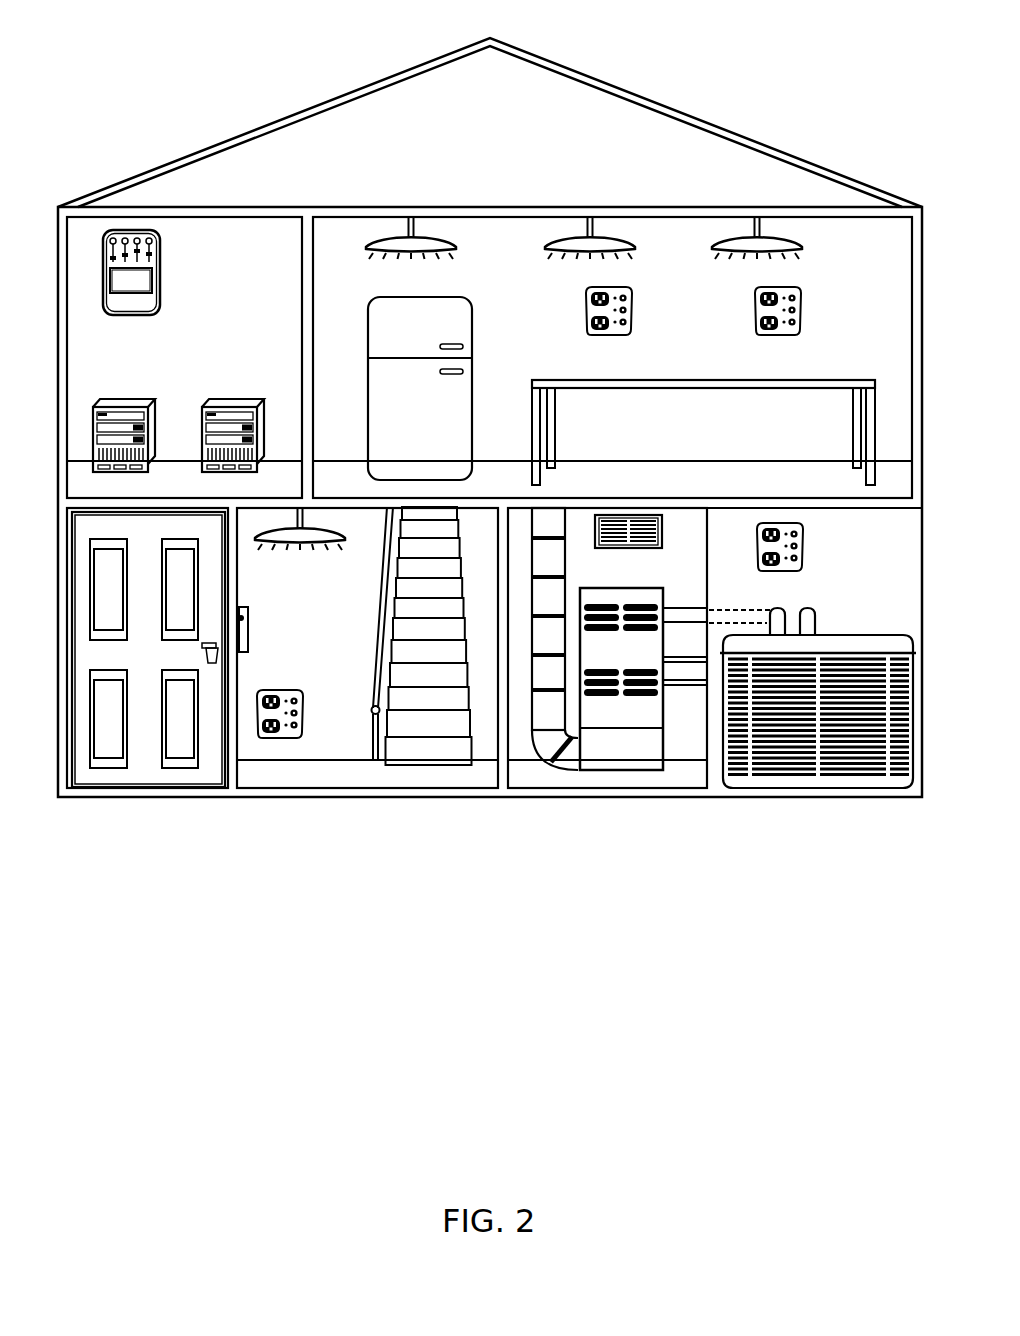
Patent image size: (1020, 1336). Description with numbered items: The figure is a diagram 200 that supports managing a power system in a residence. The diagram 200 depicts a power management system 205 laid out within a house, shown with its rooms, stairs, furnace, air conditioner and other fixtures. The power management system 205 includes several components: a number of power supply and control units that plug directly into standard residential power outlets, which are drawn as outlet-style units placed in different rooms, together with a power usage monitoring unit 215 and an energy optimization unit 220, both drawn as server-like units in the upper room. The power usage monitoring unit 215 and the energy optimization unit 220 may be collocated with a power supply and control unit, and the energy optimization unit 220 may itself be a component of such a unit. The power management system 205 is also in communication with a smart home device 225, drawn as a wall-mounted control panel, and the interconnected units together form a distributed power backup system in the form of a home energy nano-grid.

The diagram 200 is at (501, 628).
The power management system 205 is at (493, 493).
The power usage monitoring unit 215 is at (118, 398).
The energy optimization unit 220 is at (227, 398).
The smart home device 225 is at (160, 257).